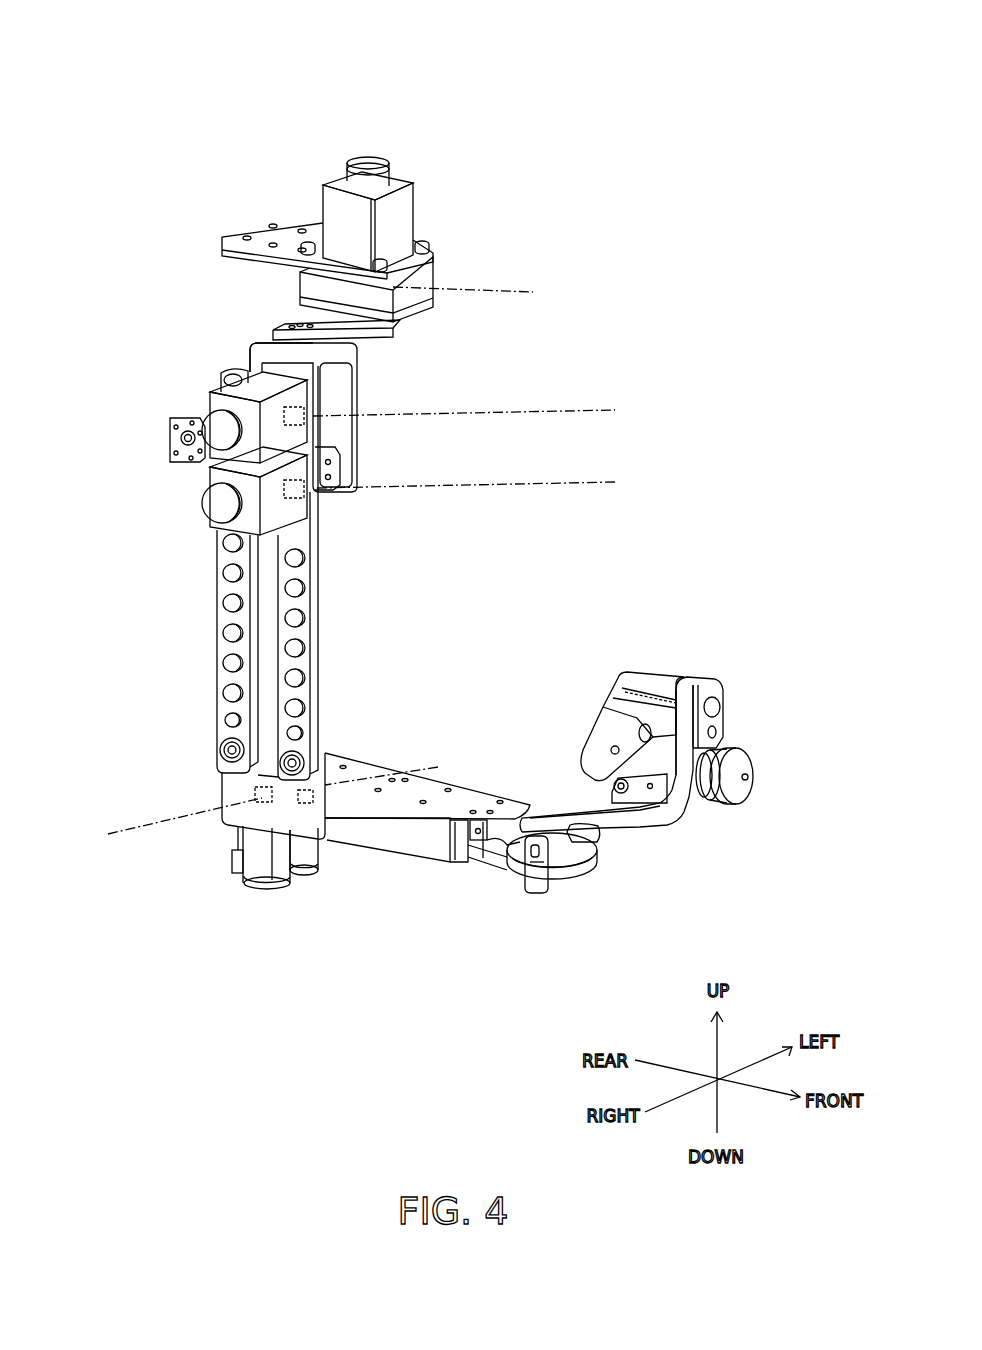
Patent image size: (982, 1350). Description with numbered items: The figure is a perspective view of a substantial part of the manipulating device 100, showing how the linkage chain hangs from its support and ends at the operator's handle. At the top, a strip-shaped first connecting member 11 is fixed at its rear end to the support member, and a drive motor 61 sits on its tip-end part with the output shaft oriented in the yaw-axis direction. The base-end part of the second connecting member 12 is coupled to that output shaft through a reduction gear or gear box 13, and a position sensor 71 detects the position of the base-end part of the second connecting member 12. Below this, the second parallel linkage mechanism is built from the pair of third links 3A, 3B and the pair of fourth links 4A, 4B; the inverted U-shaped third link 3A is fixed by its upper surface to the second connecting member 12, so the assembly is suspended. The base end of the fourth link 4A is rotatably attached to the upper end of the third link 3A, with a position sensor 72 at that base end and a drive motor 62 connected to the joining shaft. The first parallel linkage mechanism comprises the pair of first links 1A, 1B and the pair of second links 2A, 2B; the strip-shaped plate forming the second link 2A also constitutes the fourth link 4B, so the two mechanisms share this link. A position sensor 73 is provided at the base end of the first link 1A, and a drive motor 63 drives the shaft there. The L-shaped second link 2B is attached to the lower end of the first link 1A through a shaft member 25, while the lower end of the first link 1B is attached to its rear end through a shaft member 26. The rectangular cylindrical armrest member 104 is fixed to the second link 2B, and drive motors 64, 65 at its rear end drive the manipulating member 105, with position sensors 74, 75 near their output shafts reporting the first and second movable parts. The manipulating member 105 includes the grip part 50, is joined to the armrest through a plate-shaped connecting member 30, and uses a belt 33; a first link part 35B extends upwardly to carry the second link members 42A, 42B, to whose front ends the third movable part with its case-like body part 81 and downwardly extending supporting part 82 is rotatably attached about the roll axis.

The manipulating device 100 is at (472, 26).
The first connecting member 11 is at (264, 232).
The drive motor 61 is at (400, 216).
The reduction gear or gear box 13 is at (330, 290).
The position sensor 71 is at (483, 294).
The third link 3B is at (247, 362).
The second connecting member 12 is at (347, 332).
The fourth link 4A is at (222, 381).
The third link 3A is at (352, 374).
The position sensor 72 is at (484, 414).
The second link 2A is at (172, 436).
The fourth link 4B is at (133, 440).
The drive motor 62 is at (228, 430).
The position sensor 73 is at (486, 487).
The drive motor 63 is at (222, 520).
The first link 1B is at (220, 578).
The first link 1A is at (300, 570).
The manipulating member 105 is at (647, 664).
The body part 81 is at (713, 692).
The shaft member 25 is at (303, 750).
The shaft member 26 is at (217, 749).
The grip part 50 is at (597, 739).
The supporting part 82 is at (717, 746).
The position sensor 75 is at (391, 770).
The second link 2B is at (232, 794).
The position sensor 74 is at (166, 822).
The second link member 42A is at (663, 792).
The second link member 42B is at (625, 820).
The first link part 35B is at (537, 873).
The belt 33 is at (457, 862).
The connecting member 30 is at (488, 848).
The armrest member 104 is at (385, 828).
The drive motor 64 is at (258, 878).
The drive motor 65 is at (309, 872).